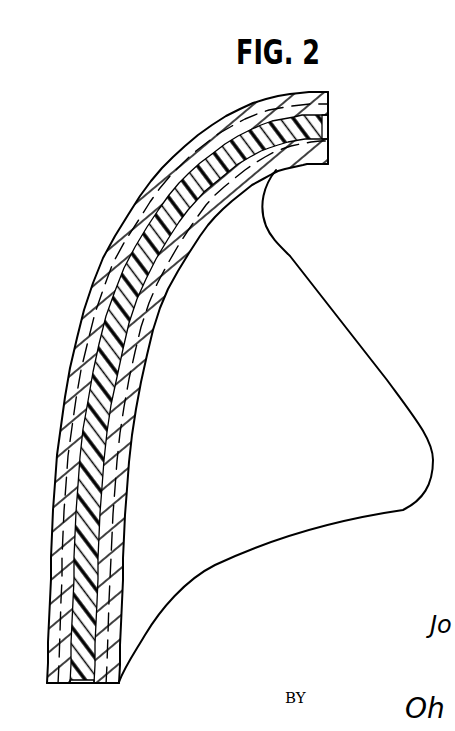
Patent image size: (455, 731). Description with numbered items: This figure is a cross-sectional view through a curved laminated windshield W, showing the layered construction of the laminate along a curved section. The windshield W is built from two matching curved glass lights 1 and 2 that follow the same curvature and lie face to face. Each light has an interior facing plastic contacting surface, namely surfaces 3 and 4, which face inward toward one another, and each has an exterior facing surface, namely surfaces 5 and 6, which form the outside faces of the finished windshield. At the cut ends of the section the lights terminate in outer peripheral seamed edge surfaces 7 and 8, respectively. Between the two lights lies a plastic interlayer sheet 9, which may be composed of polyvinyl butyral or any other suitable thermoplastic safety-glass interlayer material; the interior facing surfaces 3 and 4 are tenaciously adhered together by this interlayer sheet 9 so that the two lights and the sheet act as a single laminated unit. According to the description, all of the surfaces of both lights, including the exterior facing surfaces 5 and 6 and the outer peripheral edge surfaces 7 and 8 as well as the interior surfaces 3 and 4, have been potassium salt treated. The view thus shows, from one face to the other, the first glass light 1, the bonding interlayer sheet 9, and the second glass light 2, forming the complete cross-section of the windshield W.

The curved laminated windshield W is at (189, 107).
The curved glass light 1 is at (73, 397).
The curved glass light 2 is at (130, 397).
The interior facing plastic contacting surface 3 is at (107, 318).
The interior facing plastic contacting surface 4 is at (130, 331).
The exterior facing surface 5 is at (100, 264).
The exterior facing surface 6 is at (170, 287).
The outer peripheral seamed edge surface 7 is at (192, 405).
The outer peripheral seamed edge surface 8 is at (230, 434).
The plastic interlayer sheet 9 is at (80, 684).